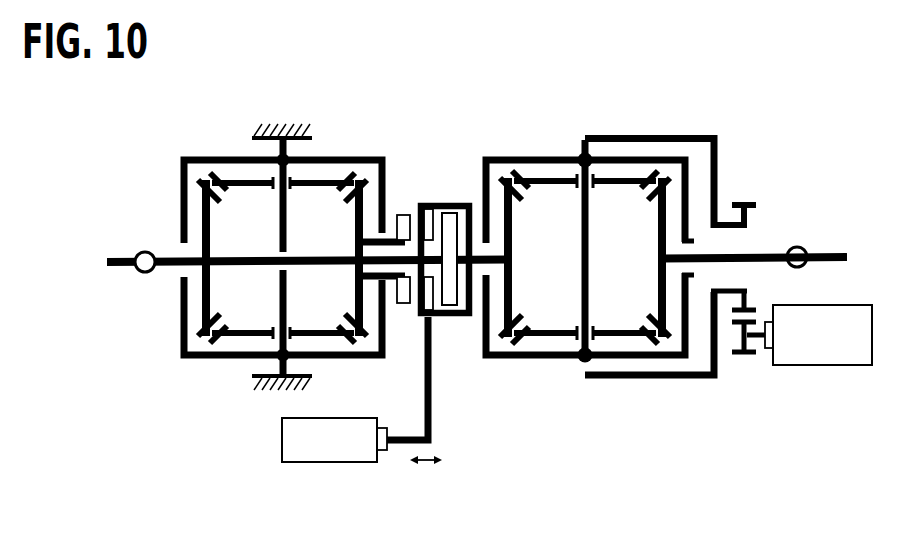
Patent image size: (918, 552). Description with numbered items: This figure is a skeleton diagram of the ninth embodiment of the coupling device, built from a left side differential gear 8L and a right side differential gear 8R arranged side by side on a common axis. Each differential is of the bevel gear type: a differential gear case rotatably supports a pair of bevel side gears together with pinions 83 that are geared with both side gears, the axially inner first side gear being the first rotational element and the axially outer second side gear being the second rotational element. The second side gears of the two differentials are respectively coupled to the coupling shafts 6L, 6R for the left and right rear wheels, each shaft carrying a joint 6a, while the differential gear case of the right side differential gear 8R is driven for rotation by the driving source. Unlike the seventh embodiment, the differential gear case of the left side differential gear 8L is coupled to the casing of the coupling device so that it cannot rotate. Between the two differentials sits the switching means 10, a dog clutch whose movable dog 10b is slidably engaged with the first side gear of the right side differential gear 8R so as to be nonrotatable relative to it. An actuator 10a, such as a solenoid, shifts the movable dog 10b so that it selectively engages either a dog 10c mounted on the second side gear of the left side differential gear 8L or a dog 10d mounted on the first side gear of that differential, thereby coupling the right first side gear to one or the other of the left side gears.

The coupling shaft 6L is at (118, 254).
The coupling shaft 6R is at (832, 252).
The universal joint 6a is at (145, 273).
The left side differential gear 8L is at (201, 131).
The right side differential gear 8R is at (588, 110).
The pinion 83 is at (547, 177).
The switching means 10 is at (441, 412).
The actuator 10a is at (332, 455).
The movable dog 10b is at (432, 205).
The dog 10c is at (452, 300).
The dog 10d is at (403, 213).